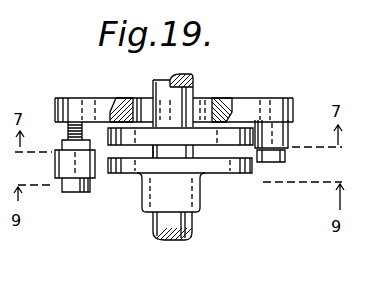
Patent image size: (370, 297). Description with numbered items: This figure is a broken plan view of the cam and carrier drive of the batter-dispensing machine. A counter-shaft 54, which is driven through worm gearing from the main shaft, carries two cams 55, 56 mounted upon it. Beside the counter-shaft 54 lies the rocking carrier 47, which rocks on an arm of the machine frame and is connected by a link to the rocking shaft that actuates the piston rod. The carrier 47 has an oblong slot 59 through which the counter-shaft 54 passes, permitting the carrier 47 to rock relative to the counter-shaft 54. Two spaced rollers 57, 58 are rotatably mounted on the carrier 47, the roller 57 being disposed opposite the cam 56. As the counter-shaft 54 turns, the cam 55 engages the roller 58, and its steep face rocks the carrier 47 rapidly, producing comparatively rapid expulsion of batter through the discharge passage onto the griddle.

The rocking carrier 47 is at (137, 98).
The oblong slot 59 is at (197, 100).
The roller 58 is at (292, 125).
The roller 57 is at (96, 180).
The counter-shaft 54 is at (157, 227).
The cam 55 is at (217, 160).
The cam 56 is at (247, 174).